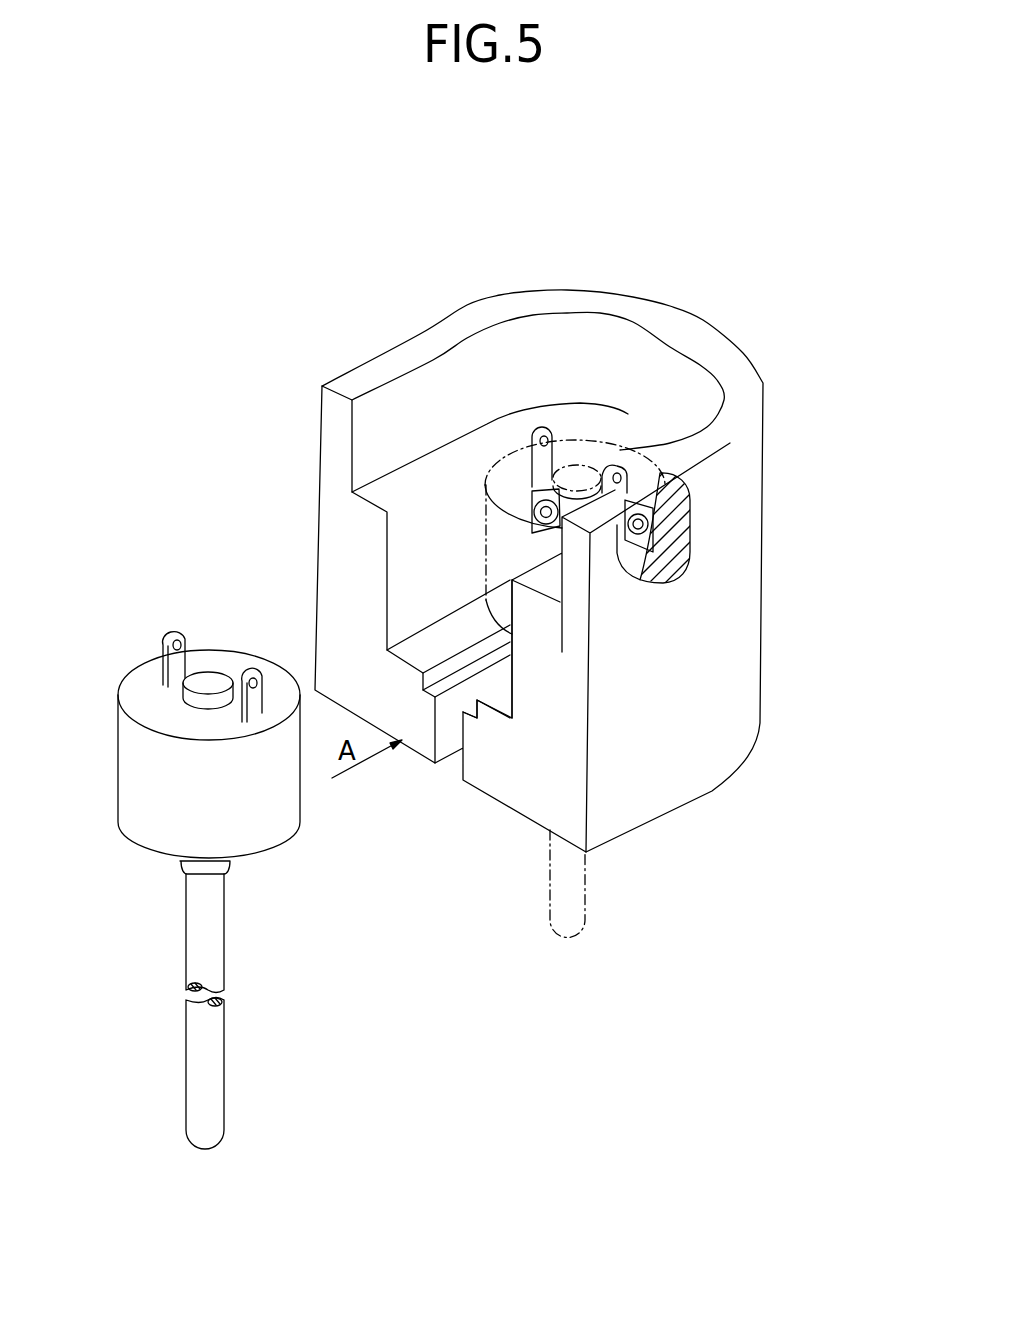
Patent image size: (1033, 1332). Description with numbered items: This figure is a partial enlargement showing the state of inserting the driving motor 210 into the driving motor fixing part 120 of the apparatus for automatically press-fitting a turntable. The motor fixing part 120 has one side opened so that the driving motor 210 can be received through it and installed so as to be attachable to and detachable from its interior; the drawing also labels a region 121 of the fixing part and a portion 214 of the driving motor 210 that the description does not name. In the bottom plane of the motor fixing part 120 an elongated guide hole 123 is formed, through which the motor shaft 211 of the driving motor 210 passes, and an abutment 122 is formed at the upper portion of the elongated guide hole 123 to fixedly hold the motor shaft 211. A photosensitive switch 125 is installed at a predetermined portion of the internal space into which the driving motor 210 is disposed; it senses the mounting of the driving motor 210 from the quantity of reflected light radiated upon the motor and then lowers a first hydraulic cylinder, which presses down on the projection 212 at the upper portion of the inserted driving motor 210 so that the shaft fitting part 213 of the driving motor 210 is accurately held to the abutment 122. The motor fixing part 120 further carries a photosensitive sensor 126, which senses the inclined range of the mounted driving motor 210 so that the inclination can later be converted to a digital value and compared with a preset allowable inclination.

The driving motor fixing part 120 is at (568, 588).
The receiving recess 121 is at (637, 350).
The abutment 122 is at (435, 670).
The elongated guide hole 123 is at (455, 763).
The photosensitive switch 125 is at (540, 490).
The photosensitive sensor 126 is at (643, 542).
The driving motor 210 is at (225, 861).
The motor shaft 211 is at (203, 1057).
The projection 212 is at (213, 672).
The shaft fitting part 213 is at (205, 870).
The plug body 214 is at (130, 783).